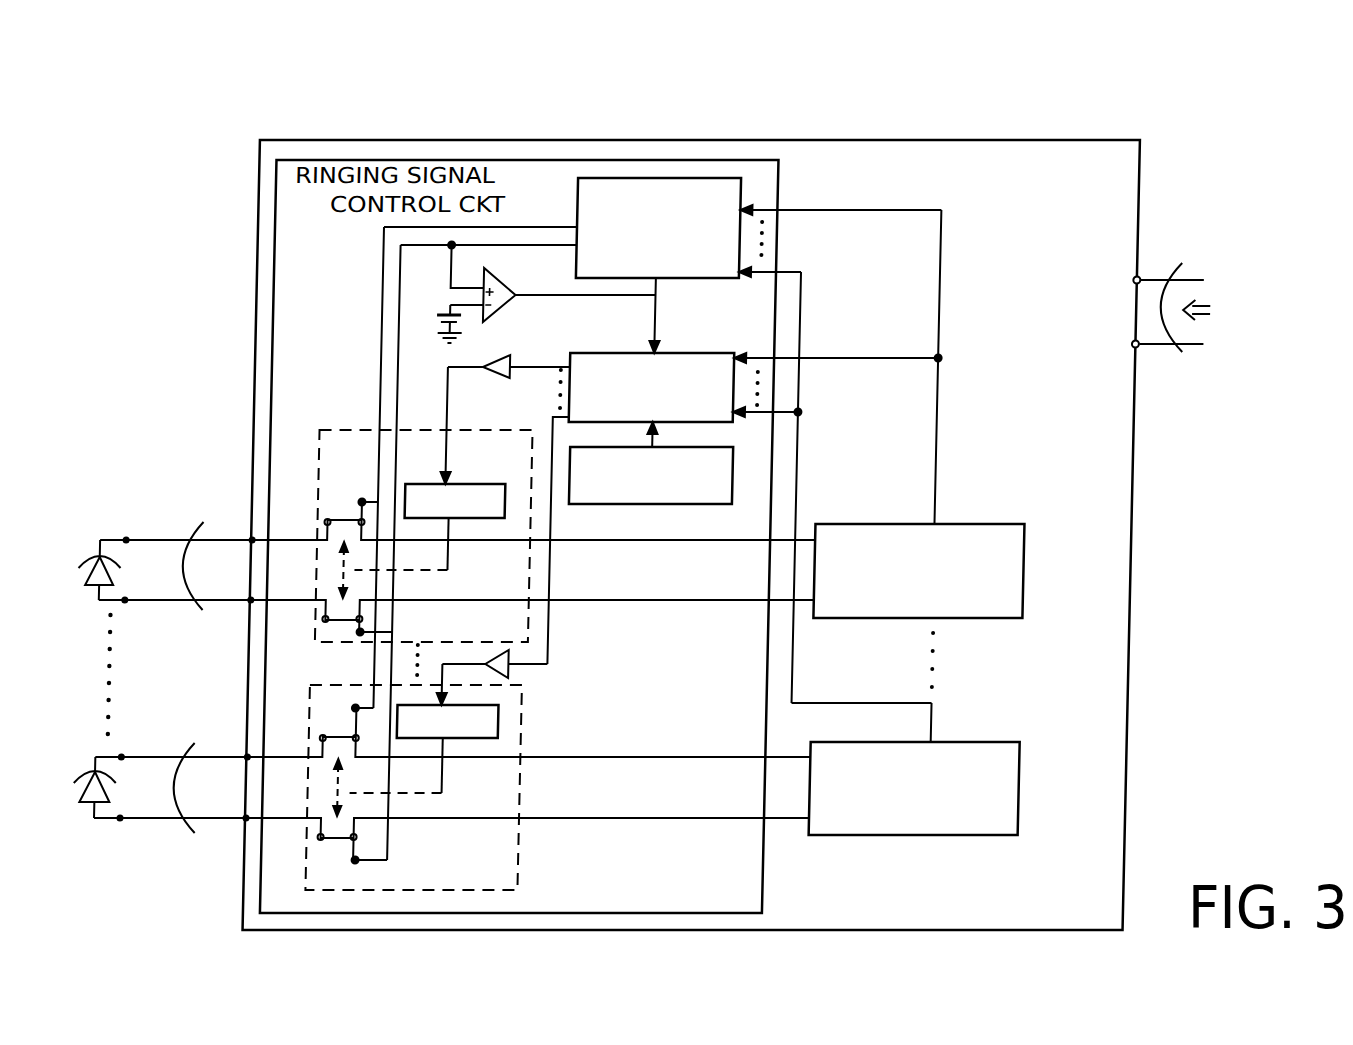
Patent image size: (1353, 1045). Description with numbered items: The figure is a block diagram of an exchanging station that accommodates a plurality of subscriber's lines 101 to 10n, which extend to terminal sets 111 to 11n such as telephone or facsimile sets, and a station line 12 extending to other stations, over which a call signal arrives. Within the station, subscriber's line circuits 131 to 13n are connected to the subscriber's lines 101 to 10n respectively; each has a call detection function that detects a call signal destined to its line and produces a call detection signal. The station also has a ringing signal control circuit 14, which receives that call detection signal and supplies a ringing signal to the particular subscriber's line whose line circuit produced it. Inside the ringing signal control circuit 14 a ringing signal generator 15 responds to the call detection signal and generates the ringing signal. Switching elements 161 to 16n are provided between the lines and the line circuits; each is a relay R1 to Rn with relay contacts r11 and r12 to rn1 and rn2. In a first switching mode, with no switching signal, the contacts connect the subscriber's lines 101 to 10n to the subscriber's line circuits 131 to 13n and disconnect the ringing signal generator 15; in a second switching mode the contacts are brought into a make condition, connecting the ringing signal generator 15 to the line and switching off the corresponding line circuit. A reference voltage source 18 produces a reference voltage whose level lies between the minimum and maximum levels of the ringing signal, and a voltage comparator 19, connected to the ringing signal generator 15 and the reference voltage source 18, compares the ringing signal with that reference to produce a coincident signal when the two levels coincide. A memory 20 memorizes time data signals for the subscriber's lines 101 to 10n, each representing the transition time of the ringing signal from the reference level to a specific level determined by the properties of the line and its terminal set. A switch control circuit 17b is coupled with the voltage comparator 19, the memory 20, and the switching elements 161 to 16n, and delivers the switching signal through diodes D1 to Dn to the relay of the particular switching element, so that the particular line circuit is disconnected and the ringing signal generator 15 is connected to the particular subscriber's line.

The ringing signal control circuit 14 is at (648, 158).
The ringing signal generator 15 is at (656, 279).
The switch control circuit 17b is at (688, 353).
The memory 20 is at (704, 504).
The reference voltage source 18 is at (446, 318).
The voltage comparator 19 is at (512, 308).
The diode D1 is at (513, 380).
The diode Dn is at (521, 673).
The relay R1 is at (501, 518).
The relay Rn is at (497, 738).
The relay contact r11 is at (356, 518).
The relay contact r12 is at (358, 623).
The relay contact rn1 is at (350, 737).
The relay contact rn2 is at (351, 840).
The switching element 161 is at (462, 536).
The switching element 16n is at (537, 690).
The subscriber's line 101 is at (199, 528).
The subscriber's line 10n is at (200, 746).
The terminal set 111 is at (93, 567).
The terminal set 11n is at (93, 781).
The subscriber's line circuit 131 is at (1009, 524).
The subscriber's line circuit 13n is at (1007, 742).
The station line 12 is at (1188, 263).